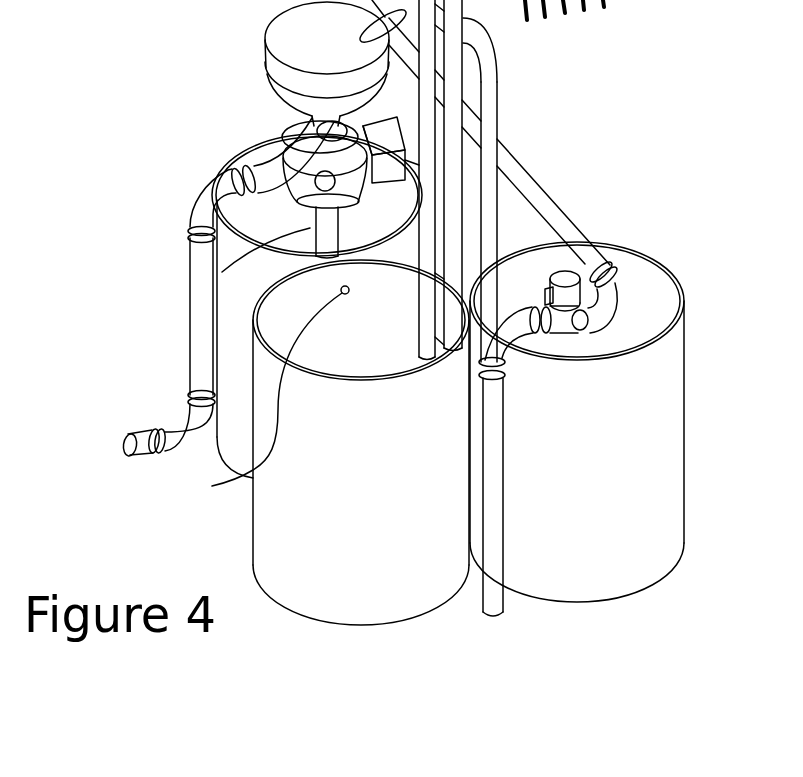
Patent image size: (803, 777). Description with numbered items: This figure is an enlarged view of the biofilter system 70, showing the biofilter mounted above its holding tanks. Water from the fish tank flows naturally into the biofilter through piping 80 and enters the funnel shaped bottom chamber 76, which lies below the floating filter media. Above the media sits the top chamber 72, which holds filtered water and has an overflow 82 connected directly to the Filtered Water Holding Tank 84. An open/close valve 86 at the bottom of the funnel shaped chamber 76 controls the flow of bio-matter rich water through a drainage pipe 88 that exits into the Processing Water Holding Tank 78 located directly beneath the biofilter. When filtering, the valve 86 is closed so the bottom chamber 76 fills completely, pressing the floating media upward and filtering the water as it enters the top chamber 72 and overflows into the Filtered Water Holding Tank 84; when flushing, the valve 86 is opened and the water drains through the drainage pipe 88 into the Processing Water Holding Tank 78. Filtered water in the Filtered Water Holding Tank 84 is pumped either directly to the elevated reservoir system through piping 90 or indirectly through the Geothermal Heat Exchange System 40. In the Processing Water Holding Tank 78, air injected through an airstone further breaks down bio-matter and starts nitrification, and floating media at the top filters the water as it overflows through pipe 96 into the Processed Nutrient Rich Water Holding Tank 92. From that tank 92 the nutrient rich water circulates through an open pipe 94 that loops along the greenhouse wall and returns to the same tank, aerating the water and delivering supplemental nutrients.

The Geothermal Heat Exchange System 40 is at (498, 612).
The biofilter system 70 is at (641, 117).
The top chamber 72 is at (277, 3).
The funnel shaped bottom chamber 76 is at (292, 121).
The Processing Water Holding Tank 78 is at (230, 313).
The piping 80 is at (182, 427).
The overflow 82 is at (490, 78).
The Filtered Water Holding Tank 84 is at (650, 387).
The open/close valve 86 is at (253, 151).
The drainage pipe 88 is at (222, 272).
The piping 90 is at (547, 211).
The Processed Nutrient Rich Water Holding Tank 92 is at (435, 585).
The open pipe 94 is at (452, 208).
The pipe 96 is at (212, 486).